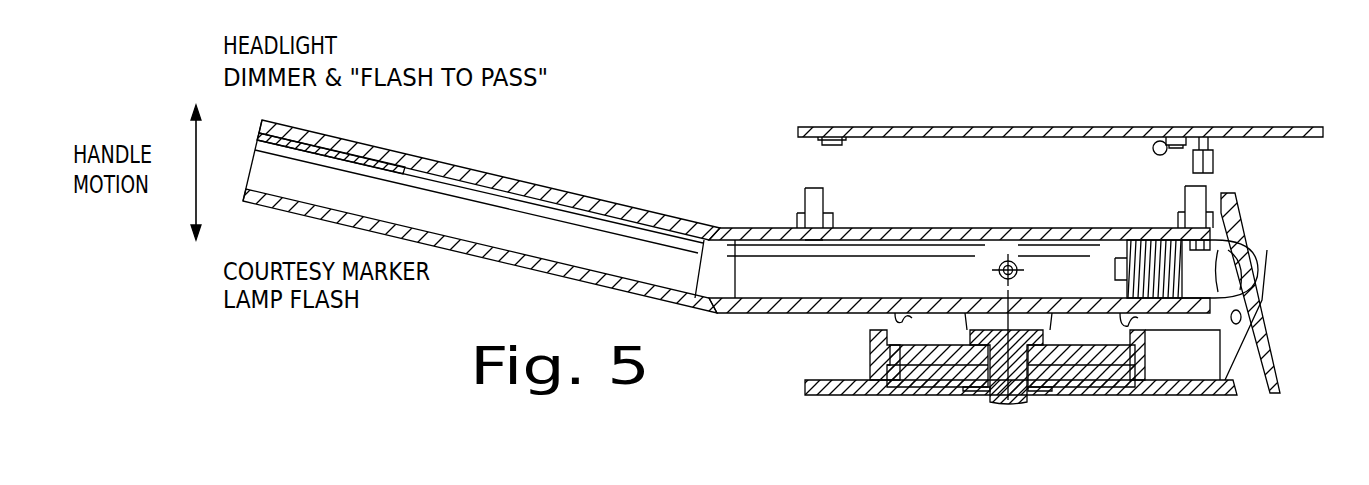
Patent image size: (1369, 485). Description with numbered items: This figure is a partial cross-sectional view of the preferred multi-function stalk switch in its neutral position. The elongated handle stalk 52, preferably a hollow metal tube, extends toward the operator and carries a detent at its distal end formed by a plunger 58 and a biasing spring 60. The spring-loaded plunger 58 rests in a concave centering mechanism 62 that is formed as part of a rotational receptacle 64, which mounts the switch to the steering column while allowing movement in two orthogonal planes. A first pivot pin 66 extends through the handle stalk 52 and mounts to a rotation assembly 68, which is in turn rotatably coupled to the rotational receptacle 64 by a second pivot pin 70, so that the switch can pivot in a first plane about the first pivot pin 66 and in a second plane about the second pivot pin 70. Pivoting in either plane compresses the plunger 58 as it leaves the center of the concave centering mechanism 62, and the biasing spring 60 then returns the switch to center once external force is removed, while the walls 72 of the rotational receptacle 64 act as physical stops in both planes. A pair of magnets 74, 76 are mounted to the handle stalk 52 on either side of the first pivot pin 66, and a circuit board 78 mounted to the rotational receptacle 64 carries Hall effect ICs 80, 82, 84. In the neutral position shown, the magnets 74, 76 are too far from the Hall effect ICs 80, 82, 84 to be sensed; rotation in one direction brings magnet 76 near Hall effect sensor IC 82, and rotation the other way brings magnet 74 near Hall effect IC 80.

The handle stalk 52 is at (494, 262).
The plunger 58 is at (1258, 258).
The biasing spring 60 is at (1124, 250).
The concave centering mechanism 62 is at (1243, 342).
The rotational receptacle 64 is at (1312, 388).
The first pivot pin 66 is at (1008, 258).
The rotation assembly 68 is at (933, 372).
The second pivot pin 70 is at (1003, 404).
The walls 72 is at (896, 316).
The magnet 74 is at (800, 210).
The magnet 76 is at (1183, 200).
The circuit board 78 is at (992, 124).
The Hall effect IC 80 is at (817, 150).
The Hall effect sensor IC 82 is at (1164, 135).
The Hall effect IC 84 is at (1220, 160).